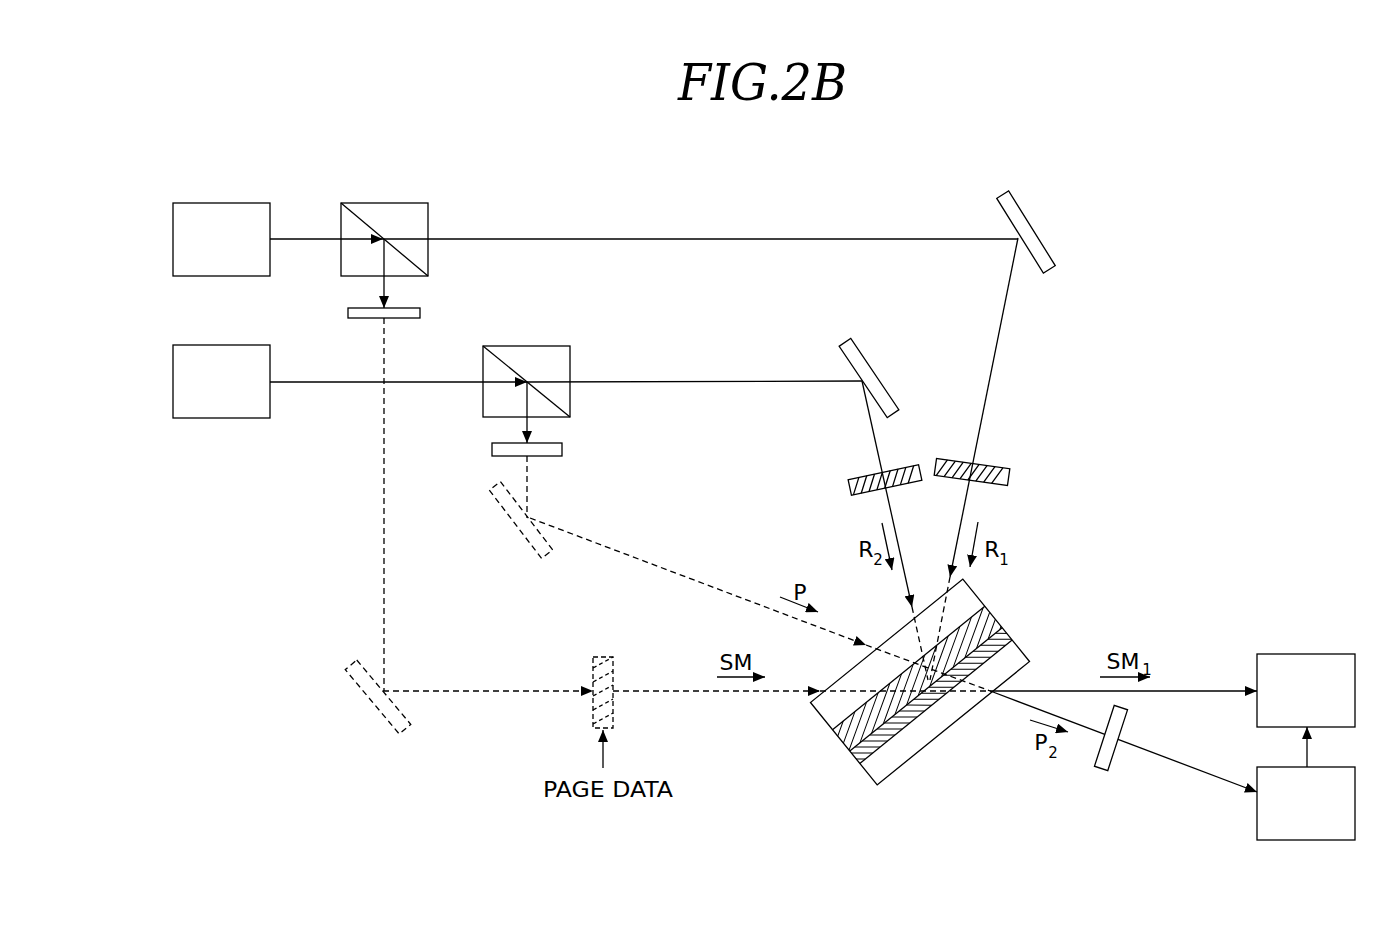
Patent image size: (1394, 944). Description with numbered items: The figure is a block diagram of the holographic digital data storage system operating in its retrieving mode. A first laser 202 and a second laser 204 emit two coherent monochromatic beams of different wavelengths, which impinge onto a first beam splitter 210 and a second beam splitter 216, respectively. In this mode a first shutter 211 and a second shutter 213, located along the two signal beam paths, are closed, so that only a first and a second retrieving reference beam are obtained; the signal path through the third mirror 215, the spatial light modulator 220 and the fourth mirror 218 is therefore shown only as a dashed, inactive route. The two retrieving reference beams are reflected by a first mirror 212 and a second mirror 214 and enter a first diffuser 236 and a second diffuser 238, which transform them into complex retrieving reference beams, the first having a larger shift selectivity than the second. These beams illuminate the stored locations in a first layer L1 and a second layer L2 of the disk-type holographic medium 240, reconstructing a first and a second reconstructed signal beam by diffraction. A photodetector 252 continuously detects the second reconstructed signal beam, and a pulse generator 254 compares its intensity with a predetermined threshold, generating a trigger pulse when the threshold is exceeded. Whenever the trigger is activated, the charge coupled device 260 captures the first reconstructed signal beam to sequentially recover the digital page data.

The first laser 202 is at (236, 203).
The second laser 204 is at (236, 345).
The first beam splitter 210 is at (401, 203).
The first shutter 211 is at (421, 314).
The first mirror 212 is at (1038, 228).
The second shutter 213 is at (563, 450).
The second mirror 214 is at (844, 342).
The third mirror 215 is at (409, 732).
The second beam splitter 216 is at (546, 346).
The fourth mirror 218 is at (515, 527).
The spatial light modulator 220 is at (607, 655).
The first diffuser 236 is at (1012, 478).
The second diffuser 238 is at (847, 483).
The holographic medium 240 is at (952, 727).
The photodetector 252 is at (1098, 773).
The pulse generator 254 is at (1257, 823).
The charge coupled device 260 is at (1321, 654).
The first layer L1 is at (1007, 632).
The second layer L2 is at (985, 606).